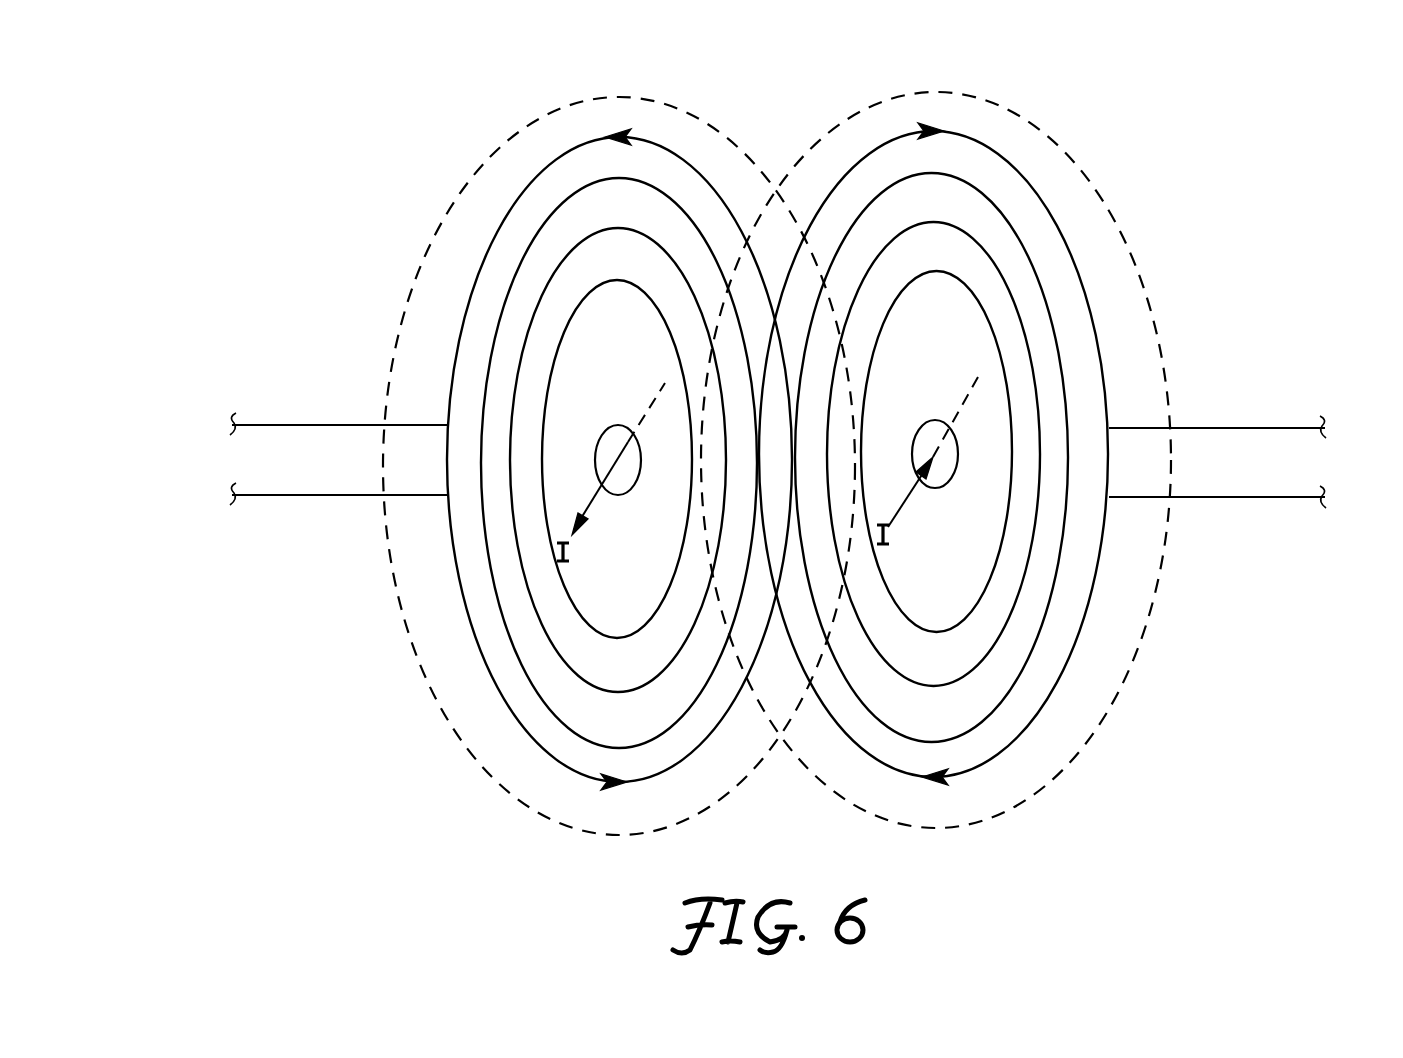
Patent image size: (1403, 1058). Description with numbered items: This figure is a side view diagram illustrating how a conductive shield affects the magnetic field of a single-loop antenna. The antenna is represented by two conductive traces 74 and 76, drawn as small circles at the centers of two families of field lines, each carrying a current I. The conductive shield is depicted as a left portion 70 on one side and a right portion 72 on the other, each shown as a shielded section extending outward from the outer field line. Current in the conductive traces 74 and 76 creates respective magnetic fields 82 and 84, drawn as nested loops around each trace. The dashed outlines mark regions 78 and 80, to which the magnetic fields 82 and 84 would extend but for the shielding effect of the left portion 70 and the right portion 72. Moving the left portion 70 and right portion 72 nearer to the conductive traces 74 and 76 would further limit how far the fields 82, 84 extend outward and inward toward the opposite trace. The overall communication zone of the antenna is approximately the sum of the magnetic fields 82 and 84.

The left portion 70 is at (372, 425).
The right portion 72 is at (1227, 428).
The conductive trace 74 is at (603, 432).
The conductive trace 76 is at (915, 432).
The region 78 is at (658, 100).
The region 80 is at (935, 93).
The magnetic field 82 is at (450, 372).
The magnetic field 84 is at (1109, 400).